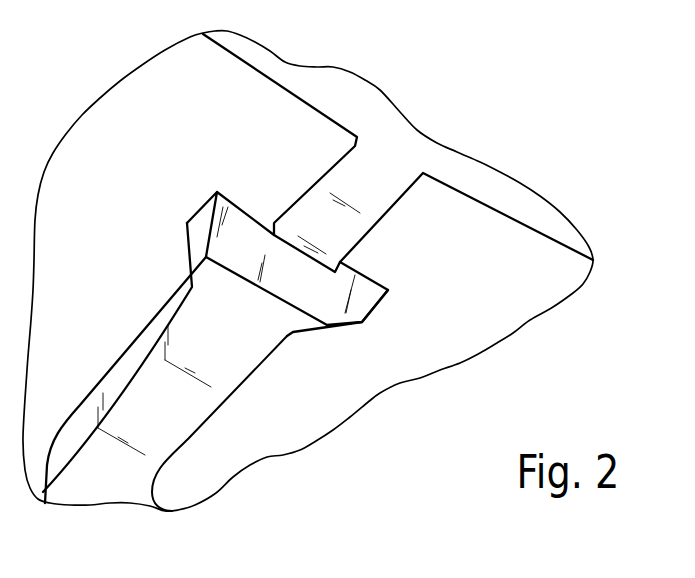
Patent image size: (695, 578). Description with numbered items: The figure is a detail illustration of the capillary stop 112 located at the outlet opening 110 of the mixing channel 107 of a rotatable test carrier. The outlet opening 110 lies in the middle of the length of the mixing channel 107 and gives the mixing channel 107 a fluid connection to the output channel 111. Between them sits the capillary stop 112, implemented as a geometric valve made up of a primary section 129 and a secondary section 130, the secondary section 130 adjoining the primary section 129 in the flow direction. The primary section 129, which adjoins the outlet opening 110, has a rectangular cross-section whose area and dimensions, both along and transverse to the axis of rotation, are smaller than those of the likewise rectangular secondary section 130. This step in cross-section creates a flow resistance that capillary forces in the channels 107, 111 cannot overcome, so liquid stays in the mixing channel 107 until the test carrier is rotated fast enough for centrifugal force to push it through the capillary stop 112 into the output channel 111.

The mixing channel 107 is at (508, 193).
The outlet opening 110 is at (393, 172).
The output channel 111 is at (168, 436).
The capillary stop 112 is at (300, 356).
The primary section 129 is at (315, 217).
The secondary section 130 is at (213, 278).